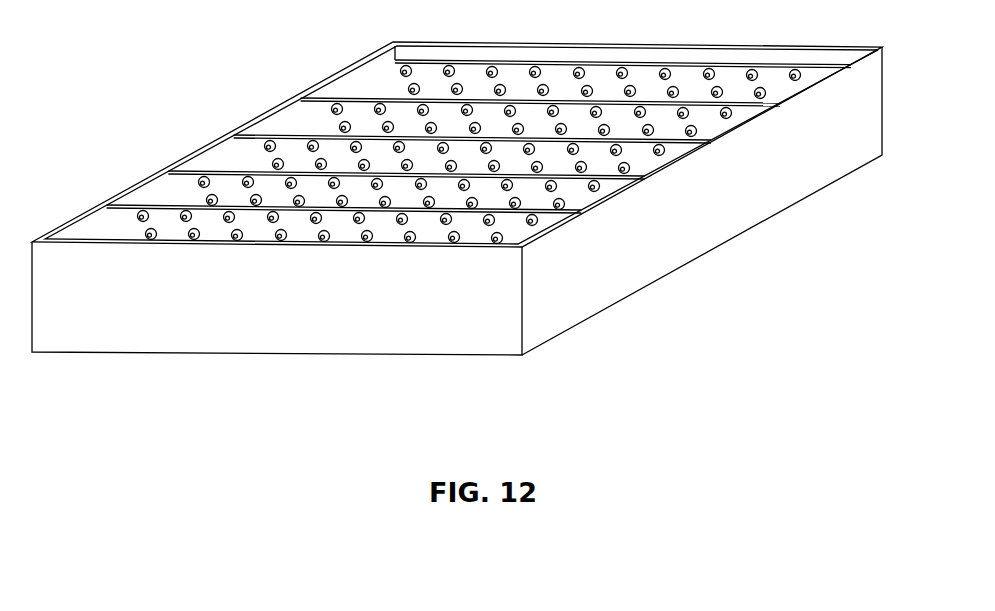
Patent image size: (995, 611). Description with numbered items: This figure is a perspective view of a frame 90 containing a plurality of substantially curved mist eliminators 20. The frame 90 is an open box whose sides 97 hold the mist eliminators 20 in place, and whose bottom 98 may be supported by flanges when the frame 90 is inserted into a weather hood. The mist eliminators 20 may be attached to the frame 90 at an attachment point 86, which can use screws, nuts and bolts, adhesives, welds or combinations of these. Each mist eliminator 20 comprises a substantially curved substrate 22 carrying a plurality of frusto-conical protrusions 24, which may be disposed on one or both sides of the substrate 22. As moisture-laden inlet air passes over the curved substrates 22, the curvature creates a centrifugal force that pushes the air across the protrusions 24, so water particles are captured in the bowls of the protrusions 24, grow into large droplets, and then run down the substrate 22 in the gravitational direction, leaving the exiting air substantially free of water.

The mist eliminator 20 is at (479, 122).
The substantially curved substrate 22 is at (479, 123).
The frusto-conical protrusion 24 is at (402, 67).
The attachment point 86 is at (113, 240).
The frame 90 is at (457, 202).
The sides 97 is at (748, 177).
The bottom 98 is at (567, 330).